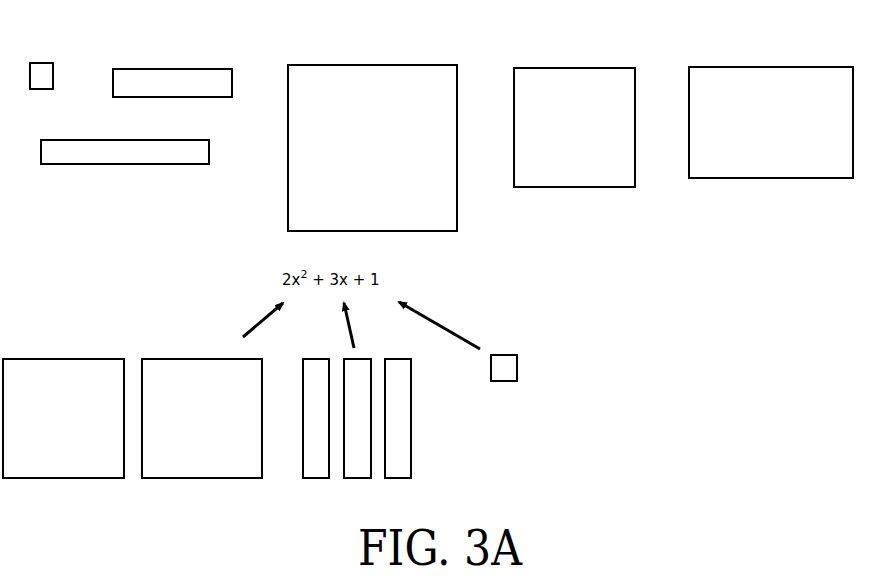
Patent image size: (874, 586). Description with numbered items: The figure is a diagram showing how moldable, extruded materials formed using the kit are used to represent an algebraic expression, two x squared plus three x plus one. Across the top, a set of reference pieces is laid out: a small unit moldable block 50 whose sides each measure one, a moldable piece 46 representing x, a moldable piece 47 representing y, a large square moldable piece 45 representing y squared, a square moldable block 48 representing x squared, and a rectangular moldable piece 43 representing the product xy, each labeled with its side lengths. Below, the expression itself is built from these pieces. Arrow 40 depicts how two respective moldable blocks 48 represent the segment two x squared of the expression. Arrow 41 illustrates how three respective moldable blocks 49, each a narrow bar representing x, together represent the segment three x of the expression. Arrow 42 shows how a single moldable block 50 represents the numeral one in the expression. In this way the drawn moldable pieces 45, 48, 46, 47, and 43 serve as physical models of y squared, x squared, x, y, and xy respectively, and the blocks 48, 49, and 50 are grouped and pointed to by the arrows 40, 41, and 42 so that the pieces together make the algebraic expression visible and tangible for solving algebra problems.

The arrow 40 is at (258, 323).
The arrow 41 is at (349, 329).
The arrow 42 is at (440, 320).
The moldable piece 43 is at (712, 67).
The moldable piece 45 is at (311, 65).
The moldable piece 46 is at (200, 69).
The moldable piece 47 is at (156, 165).
The moldable block 48 is at (537, 68).
The moldable block 49 is at (311, 479).
The moldable block 50 is at (54, 74).